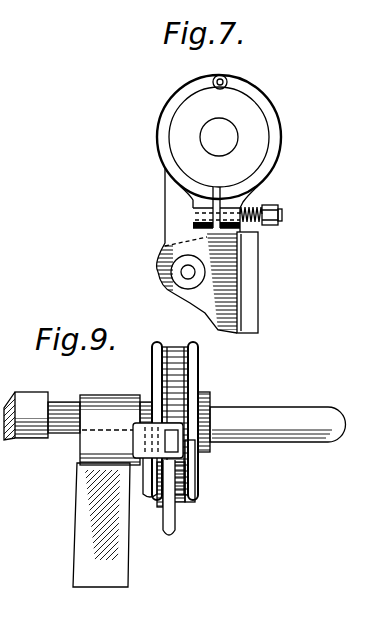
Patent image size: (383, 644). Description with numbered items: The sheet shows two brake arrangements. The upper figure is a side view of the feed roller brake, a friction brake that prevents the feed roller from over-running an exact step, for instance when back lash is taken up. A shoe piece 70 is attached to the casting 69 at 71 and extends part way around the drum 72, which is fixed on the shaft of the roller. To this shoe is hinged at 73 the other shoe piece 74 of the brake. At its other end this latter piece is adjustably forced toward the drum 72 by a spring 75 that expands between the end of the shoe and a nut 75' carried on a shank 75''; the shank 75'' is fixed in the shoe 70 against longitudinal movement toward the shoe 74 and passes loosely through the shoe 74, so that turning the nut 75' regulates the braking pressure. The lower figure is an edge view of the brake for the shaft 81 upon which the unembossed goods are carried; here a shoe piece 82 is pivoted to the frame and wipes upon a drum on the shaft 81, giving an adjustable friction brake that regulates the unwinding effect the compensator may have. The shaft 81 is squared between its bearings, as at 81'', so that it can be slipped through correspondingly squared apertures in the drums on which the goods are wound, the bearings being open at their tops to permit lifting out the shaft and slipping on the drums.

In FIG. 7, the casting 69 is at (245, 323).
In FIG. 7, the shoe piece 70 is at (168, 105).
In FIG. 7, the attachment point 71 is at (185, 272).
In FIG. 7, the drum 72 is at (208, 140).
In FIG. 7, the hinge 73 is at (228, 76).
In FIG. 7, the shoe piece 74 is at (275, 135).
In FIG. 7, the spring 75 is at (270, 200).
In FIG. 7, the nut 75' is at (283, 229).
In FIG. 7, the shank 75'' is at (307, 212).
In FIG. 9, the shaft 81 is at (197, 407).
In FIG. 9, the squared portion 81'' is at (26, 405).
In FIG. 9, the shoe piece 82 is at (175, 518).